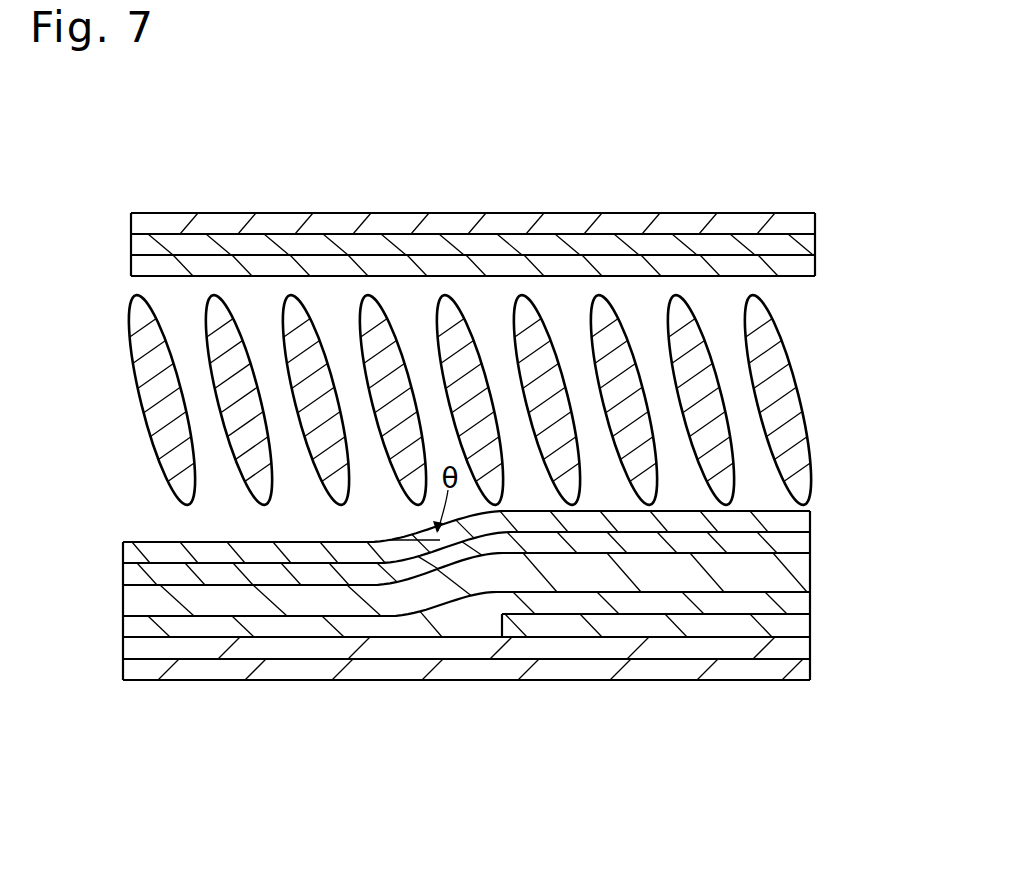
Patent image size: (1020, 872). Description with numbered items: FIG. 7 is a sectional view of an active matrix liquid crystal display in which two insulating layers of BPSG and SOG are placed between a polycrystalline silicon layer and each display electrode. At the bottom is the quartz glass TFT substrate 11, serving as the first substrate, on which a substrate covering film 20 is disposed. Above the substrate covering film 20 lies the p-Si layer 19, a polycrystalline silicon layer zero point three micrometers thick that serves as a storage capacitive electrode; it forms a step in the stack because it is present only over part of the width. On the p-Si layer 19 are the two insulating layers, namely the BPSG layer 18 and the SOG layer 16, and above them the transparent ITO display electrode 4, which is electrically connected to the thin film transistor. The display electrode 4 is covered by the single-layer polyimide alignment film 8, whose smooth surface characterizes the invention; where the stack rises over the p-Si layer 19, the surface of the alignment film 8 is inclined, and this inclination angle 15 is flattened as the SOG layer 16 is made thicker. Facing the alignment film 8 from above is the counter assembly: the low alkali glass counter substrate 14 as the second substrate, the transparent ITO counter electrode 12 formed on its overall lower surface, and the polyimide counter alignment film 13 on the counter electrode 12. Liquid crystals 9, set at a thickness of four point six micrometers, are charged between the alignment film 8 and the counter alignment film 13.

The display electrode 4 is at (810, 540).
The alignment film 8 is at (813, 511).
The liquid crystals 9 is at (790, 352).
The TFT substrate 11 is at (653, 675).
The counter electrode 12 is at (397, 240).
The counter alignment film 13 is at (810, 265).
The counter substrate 14 is at (170, 212).
The inclination angle 15 is at (423, 532).
The SOG layer 16 is at (808, 568).
The BPSG layer 18 is at (802, 603).
The p-Si layer 19 is at (803, 625).
The substrate covering film 20 is at (413, 652).